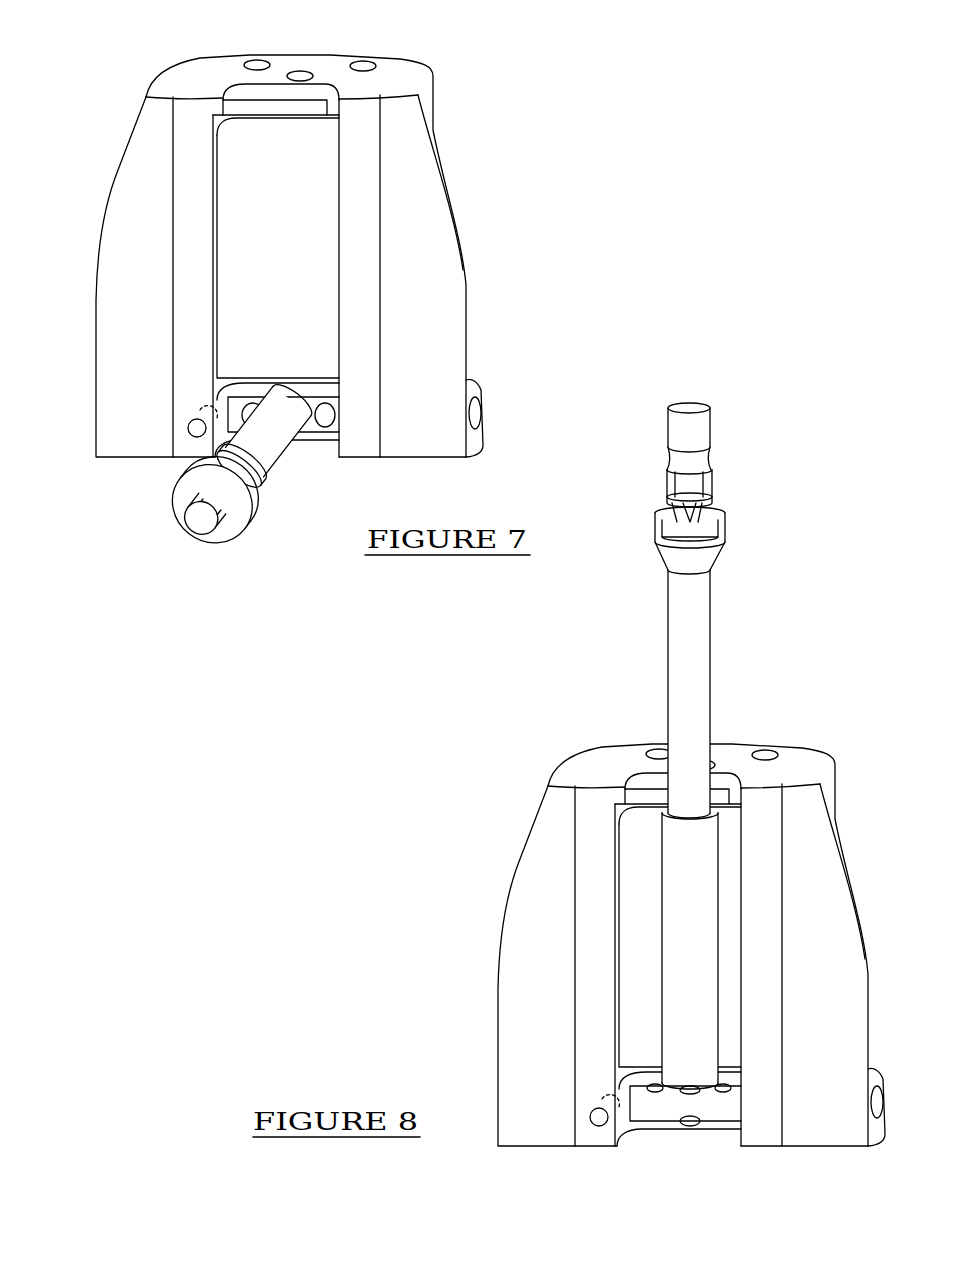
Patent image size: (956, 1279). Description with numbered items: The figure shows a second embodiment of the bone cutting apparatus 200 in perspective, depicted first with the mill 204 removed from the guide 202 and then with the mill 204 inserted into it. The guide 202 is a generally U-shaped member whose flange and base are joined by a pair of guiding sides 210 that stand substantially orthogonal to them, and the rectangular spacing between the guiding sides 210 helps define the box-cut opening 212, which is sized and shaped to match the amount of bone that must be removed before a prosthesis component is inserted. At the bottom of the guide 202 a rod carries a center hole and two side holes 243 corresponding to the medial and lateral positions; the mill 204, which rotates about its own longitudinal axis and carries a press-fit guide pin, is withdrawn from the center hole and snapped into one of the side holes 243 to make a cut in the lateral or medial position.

In FIG. 7, the bone cutting apparatus 200 is at (500, 70).
In FIG. 8, the bone cutting apparatus 200 is at (462, 793).
In FIG. 7, the guide 202 is at (153, 80).
In FIG. 8, the guide 202 is at (560, 772).
In FIG. 7, the mill 204 is at (280, 525).
In FIG. 8, the mill 204 is at (726, 688).
In FIG. 7, the guiding sides 210 is at (118, 248).
In FIG. 8, the guiding sides 210 is at (522, 938).
In FIG. 7, the box-cut opening 212 is at (288, 177).
In FIG. 8, the box-cut opening 212 is at (641, 934).
In FIG. 7, the side holes 243 is at (250, 412).
In FIG. 8, the side holes 243 is at (689, 1105).